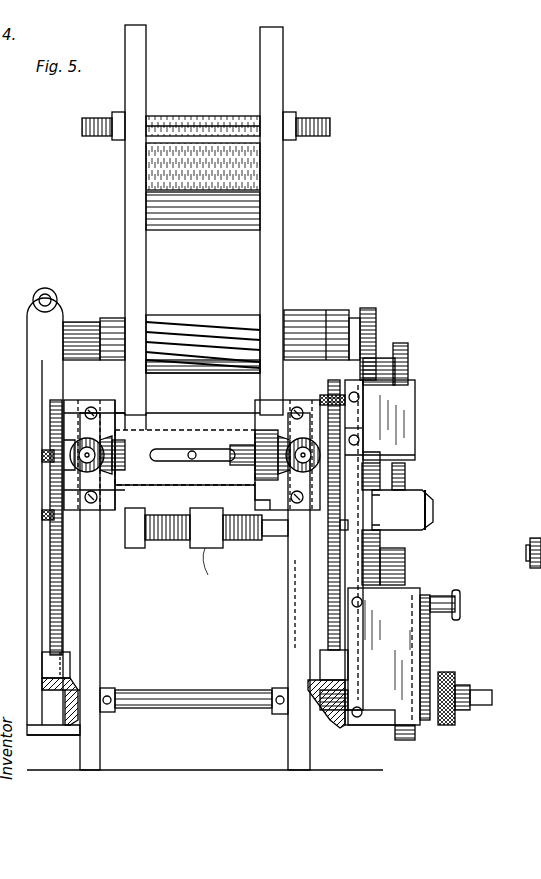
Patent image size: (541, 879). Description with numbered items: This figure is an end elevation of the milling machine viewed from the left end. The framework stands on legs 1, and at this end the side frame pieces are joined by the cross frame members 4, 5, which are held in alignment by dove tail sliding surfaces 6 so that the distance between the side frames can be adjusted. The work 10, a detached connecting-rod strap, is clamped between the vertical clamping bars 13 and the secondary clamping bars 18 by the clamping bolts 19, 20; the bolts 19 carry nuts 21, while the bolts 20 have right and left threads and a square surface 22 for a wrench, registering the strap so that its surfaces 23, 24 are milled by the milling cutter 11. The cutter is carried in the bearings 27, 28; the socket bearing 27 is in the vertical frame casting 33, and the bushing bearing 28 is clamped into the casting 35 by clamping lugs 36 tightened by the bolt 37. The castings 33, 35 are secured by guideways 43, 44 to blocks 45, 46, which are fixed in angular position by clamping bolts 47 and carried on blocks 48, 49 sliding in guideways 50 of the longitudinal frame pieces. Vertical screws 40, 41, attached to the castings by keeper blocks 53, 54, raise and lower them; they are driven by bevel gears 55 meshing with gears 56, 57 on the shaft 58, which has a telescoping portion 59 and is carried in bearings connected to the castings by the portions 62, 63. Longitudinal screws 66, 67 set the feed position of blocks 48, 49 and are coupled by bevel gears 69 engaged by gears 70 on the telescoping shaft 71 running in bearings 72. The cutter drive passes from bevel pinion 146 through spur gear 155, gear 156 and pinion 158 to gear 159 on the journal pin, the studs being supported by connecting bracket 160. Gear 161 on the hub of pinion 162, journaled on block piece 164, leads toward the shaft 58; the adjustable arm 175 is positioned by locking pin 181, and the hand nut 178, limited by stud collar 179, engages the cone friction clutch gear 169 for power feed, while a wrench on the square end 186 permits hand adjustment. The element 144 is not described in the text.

The legs 1 is at (100, 622).
The cross frame member 4 is at (250, 488).
The cross frame member 5 is at (166, 486).
The dove tail sliding surfaces 6 is at (215, 430).
The work 10 is at (145, 166).
The milling cutter 11 is at (160, 314).
The vertical clamping bars 13 is at (283, 248).
The secondary clamping bars 18 is at (137, 228).
The clamping bolts 19 is at (196, 110).
The clamping bolts 20 is at (175, 540).
The nuts 21 is at (118, 115).
The square surface 22 is at (210, 560).
The surface 23 is at (203, 210).
The surface 24 is at (190, 360).
The bearing 27 is at (312, 310).
The bearing 28 is at (78, 332).
The vertical frame casting 33 is at (366, 320).
The casting 35 is at (30, 344).
The clamping lugs 36 is at (45, 287).
The bolt 37 is at (53, 298).
The vertical screw 40 is at (328, 575).
The vertical screw 41 is at (65, 562).
The guideway 43 is at (340, 605).
The guideway 44 is at (56, 590).
The block 45 is at (363, 426).
The block 46 is at (60, 505).
The clamping bolts 47 is at (415, 452).
The block 48 is at (340, 520).
The block 49 is at (72, 500).
The guideways 50 is at (77, 400).
The keeper block 53 is at (320, 666).
The keeper block 54 is at (72, 660).
The bevel gears 55 is at (75, 680).
The gear 56 is at (318, 718).
The gear 57 is at (76, 716).
The shaft 58 is at (233, 708).
The telescoping portion 59 is at (170, 708).
The portion 62 is at (352, 728).
The portion 63 is at (50, 735).
The longitudinal screw 66 is at (288, 570).
The longitudinal screw 67 is at (70, 450).
The bevel gears 69 is at (91, 407).
The gears 70 is at (106, 400).
The telescoping shaft 71 is at (193, 461).
The bearings 72 is at (118, 445).
The cone 144 is at (408, 515).
The bevel pinion 146 is at (410, 490).
The spur gear 155 is at (398, 472).
The gear 156 is at (408, 345).
The pinion 158 is at (386, 358).
The gear 159 is at (376, 318).
The connecting bracket 160 is at (415, 398).
The gear 161 is at (422, 530).
The pinion 162 is at (400, 560).
The block piece 164 is at (395, 650).
The cone friction clutch gear 169 is at (410, 740).
The adjustable arm 175 is at (440, 617).
The hand nut 178 is at (445, 725).
The stud collar 179 is at (462, 686).
The locking pin 181 is at (458, 596).
The square end 186 is at (492, 697).